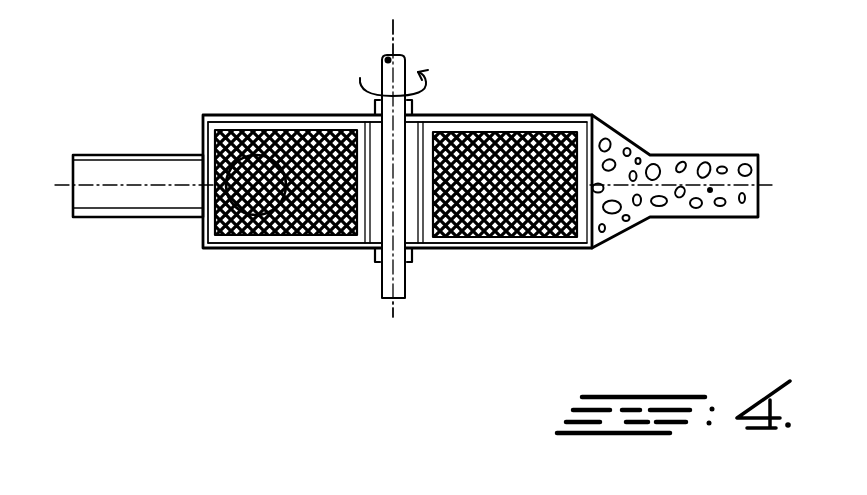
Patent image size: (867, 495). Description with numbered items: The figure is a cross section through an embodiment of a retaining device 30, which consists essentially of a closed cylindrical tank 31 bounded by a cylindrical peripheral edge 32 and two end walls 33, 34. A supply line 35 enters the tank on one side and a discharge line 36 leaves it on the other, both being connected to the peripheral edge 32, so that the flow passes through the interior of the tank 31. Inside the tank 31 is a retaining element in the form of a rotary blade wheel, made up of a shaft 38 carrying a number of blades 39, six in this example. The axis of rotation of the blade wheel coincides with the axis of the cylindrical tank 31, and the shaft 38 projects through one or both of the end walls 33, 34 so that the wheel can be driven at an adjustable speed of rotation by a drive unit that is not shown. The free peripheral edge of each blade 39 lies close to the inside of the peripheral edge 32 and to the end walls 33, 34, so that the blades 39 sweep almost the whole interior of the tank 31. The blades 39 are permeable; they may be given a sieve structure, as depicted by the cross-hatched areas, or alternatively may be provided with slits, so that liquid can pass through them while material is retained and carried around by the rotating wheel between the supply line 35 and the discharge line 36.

The retaining device 30 is at (414, 169).
The cylindrical tank 31 is at (377, 174).
The peripheral edge 32 is at (198, 232).
The end wall 33 is at (285, 117).
The end wall 34 is at (325, 250).
The supply line 35 is at (118, 221).
The discharge line 36 is at (703, 153).
The shaft 38 is at (423, 236).
The blades 39 is at (275, 235).